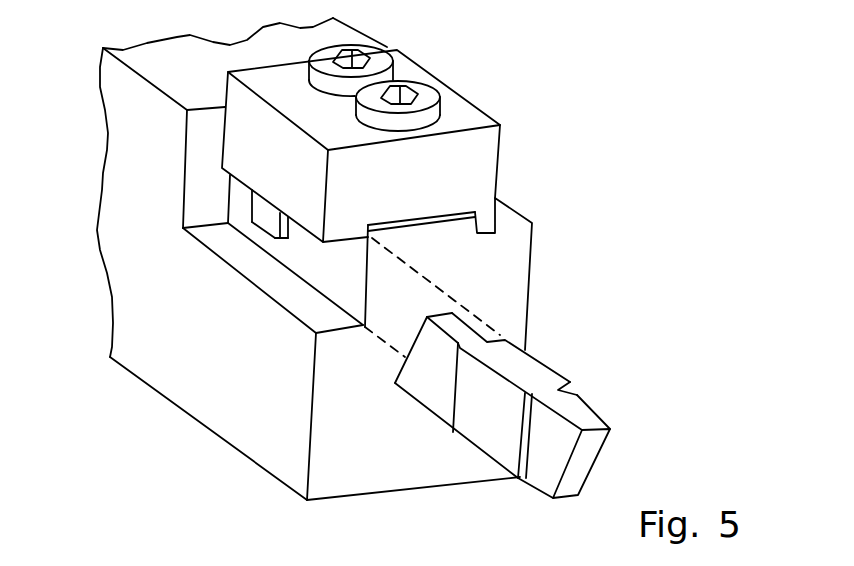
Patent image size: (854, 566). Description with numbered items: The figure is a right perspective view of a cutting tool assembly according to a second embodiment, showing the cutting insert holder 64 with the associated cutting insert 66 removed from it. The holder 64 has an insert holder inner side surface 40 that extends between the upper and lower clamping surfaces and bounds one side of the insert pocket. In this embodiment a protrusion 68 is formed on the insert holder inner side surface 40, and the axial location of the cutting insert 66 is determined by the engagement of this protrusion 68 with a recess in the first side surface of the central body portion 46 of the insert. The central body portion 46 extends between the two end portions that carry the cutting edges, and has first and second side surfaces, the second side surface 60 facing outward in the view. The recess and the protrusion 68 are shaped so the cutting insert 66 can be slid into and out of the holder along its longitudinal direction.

The insert holder inner side surface 40 is at (332, 273).
The central body portion 46 is at (577, 413).
The second side surface 60 is at (492, 425).
The cutting insert holder 64 is at (612, 57).
The cutting insert 66 is at (650, 377).
The protrusion 68 is at (265, 213).